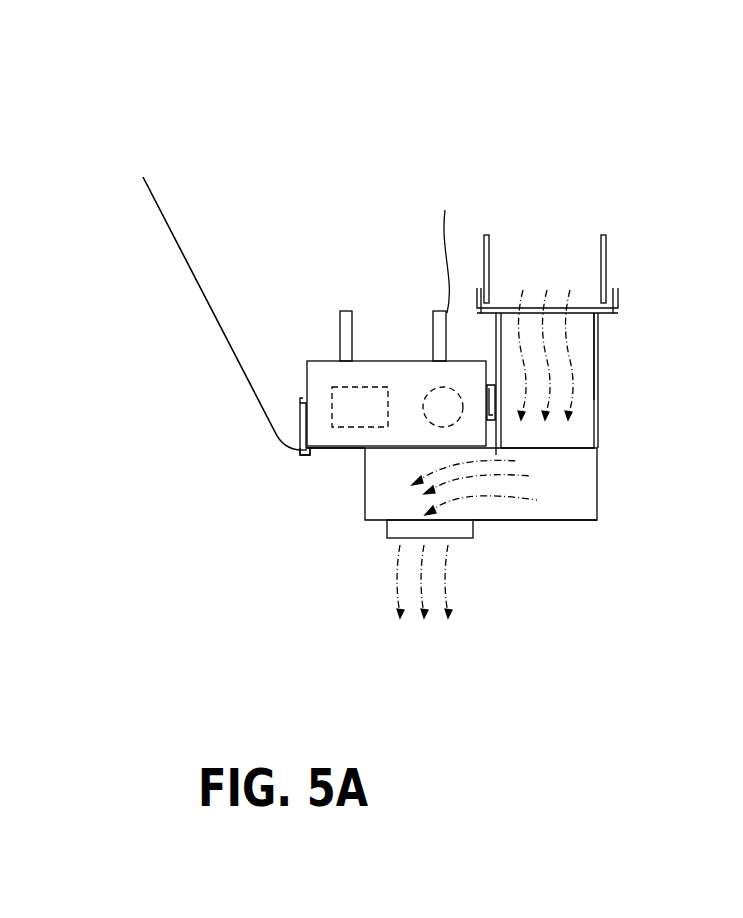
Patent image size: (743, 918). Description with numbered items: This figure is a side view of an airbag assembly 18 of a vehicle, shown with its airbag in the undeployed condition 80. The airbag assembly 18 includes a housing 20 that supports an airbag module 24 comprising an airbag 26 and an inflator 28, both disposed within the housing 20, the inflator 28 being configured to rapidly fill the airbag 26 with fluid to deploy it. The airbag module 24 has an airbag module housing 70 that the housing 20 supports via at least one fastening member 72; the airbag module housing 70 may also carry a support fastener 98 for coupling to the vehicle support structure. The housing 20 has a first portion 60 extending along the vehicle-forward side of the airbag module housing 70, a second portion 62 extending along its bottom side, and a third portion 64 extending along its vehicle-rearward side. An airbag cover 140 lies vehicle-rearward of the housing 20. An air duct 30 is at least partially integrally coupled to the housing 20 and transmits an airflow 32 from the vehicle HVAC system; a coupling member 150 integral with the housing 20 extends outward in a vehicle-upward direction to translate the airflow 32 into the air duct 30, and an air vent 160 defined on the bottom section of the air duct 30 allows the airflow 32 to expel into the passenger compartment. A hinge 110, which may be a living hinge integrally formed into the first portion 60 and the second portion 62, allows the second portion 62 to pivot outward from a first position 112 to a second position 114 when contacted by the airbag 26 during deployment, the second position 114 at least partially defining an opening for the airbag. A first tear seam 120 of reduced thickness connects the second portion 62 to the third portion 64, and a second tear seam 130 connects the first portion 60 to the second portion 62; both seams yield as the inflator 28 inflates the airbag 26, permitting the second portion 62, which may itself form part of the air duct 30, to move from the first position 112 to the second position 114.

The airbag assembly 18 is at (523, 212).
The housing 20 is at (598, 355).
The airbag module 24 is at (382, 366).
The airbag 26 is at (338, 387).
The inflator 28 is at (429, 392).
The air duct 30 is at (598, 463).
The airflow 32 is at (598, 405).
The first portion 60 is at (598, 327).
The second portion 62 is at (597, 513).
The third portion 64 is at (297, 420).
The airbag module housing 70 is at (303, 373).
The fastening member 72 is at (300, 400).
The undeployed condition 80 is at (315, 455).
The support fastener 98 is at (444, 248).
The hinge 110 is at (598, 445).
The first position 112 is at (590, 497).
The second position 114 is at (565, 522).
The first tear seam 120 is at (320, 457).
The second tear seam 130 is at (498, 448).
The airbag cover 140 is at (181, 253).
The coupling member 150 is at (607, 290).
The air vent 160 is at (463, 540).